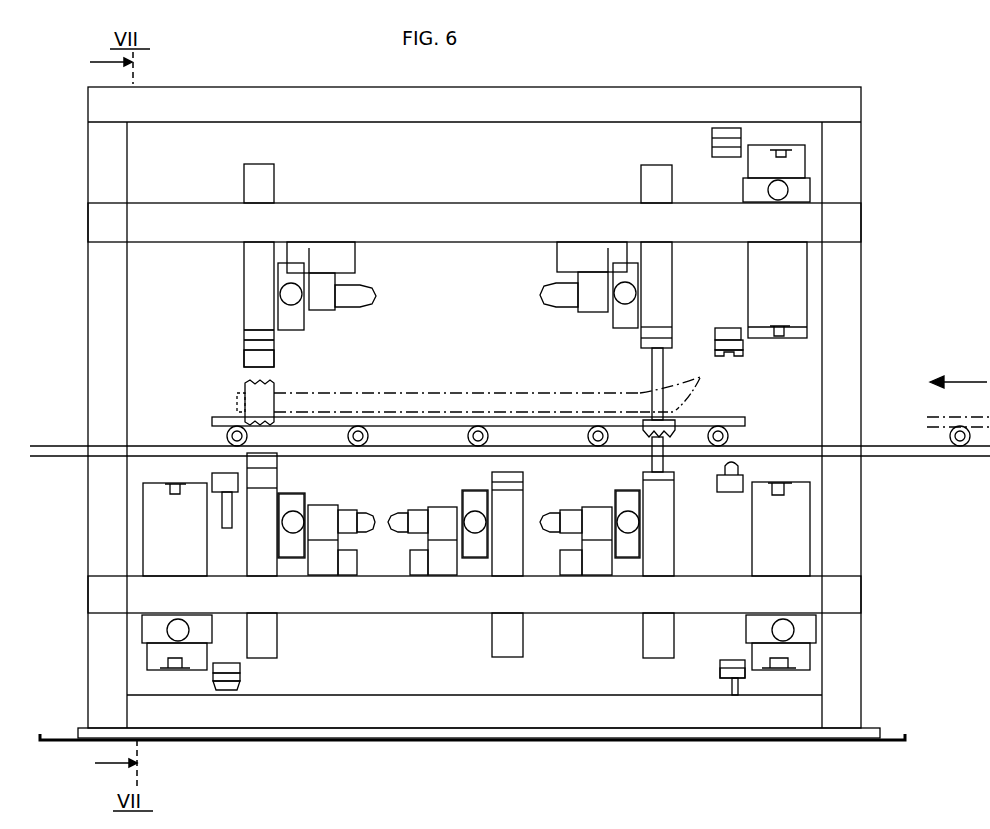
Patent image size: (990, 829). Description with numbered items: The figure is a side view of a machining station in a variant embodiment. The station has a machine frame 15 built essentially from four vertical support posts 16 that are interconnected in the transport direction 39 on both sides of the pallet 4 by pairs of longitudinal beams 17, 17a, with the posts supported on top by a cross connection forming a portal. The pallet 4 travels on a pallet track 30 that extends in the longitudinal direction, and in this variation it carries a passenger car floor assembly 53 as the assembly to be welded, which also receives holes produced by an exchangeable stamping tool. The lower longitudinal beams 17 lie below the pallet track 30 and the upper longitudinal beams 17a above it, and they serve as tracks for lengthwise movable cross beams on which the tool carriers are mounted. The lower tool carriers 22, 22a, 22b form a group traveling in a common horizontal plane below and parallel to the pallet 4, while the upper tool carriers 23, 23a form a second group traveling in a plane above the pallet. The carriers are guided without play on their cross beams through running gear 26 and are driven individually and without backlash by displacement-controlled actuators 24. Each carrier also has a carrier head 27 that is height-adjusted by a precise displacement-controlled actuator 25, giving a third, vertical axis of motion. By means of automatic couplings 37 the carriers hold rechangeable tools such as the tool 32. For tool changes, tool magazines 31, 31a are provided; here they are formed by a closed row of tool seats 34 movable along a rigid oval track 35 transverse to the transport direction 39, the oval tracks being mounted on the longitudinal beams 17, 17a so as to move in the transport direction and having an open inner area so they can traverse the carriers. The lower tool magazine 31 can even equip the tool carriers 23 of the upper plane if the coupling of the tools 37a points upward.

The pallet 4 is at (745, 422).
The machine frame 15 is at (916, 132).
The vertical support posts 16 is at (88, 692).
The lower longitudinal beam 17 is at (447, 600).
The upper longitudinal beam 17a is at (440, 222).
The tool carrier 22 is at (637, 478).
The tool carrier 22a is at (480, 482).
The tool carrier 22b is at (284, 480).
The tool carrier 23 is at (622, 357).
The tool carrier 23a is at (290, 352).
The actuator 24 is at (415, 518).
The actuator 25 is at (298, 318).
The running gear 26 is at (743, 188).
The carrier head 27 is at (266, 180).
The pallet track 30 is at (942, 458).
The tool magazine 31 is at (160, 540).
The upper tool magazine 31a is at (800, 265).
The tool 32 is at (248, 345).
The tool seat 34 is at (715, 338).
The oval track 35 is at (780, 332).
The automatic coupling 37 is at (248, 333).
The coupling of the tools 37a is at (215, 474).
The transport direction 39 is at (958, 373).
The passenger car floor assembly 53 is at (462, 394).